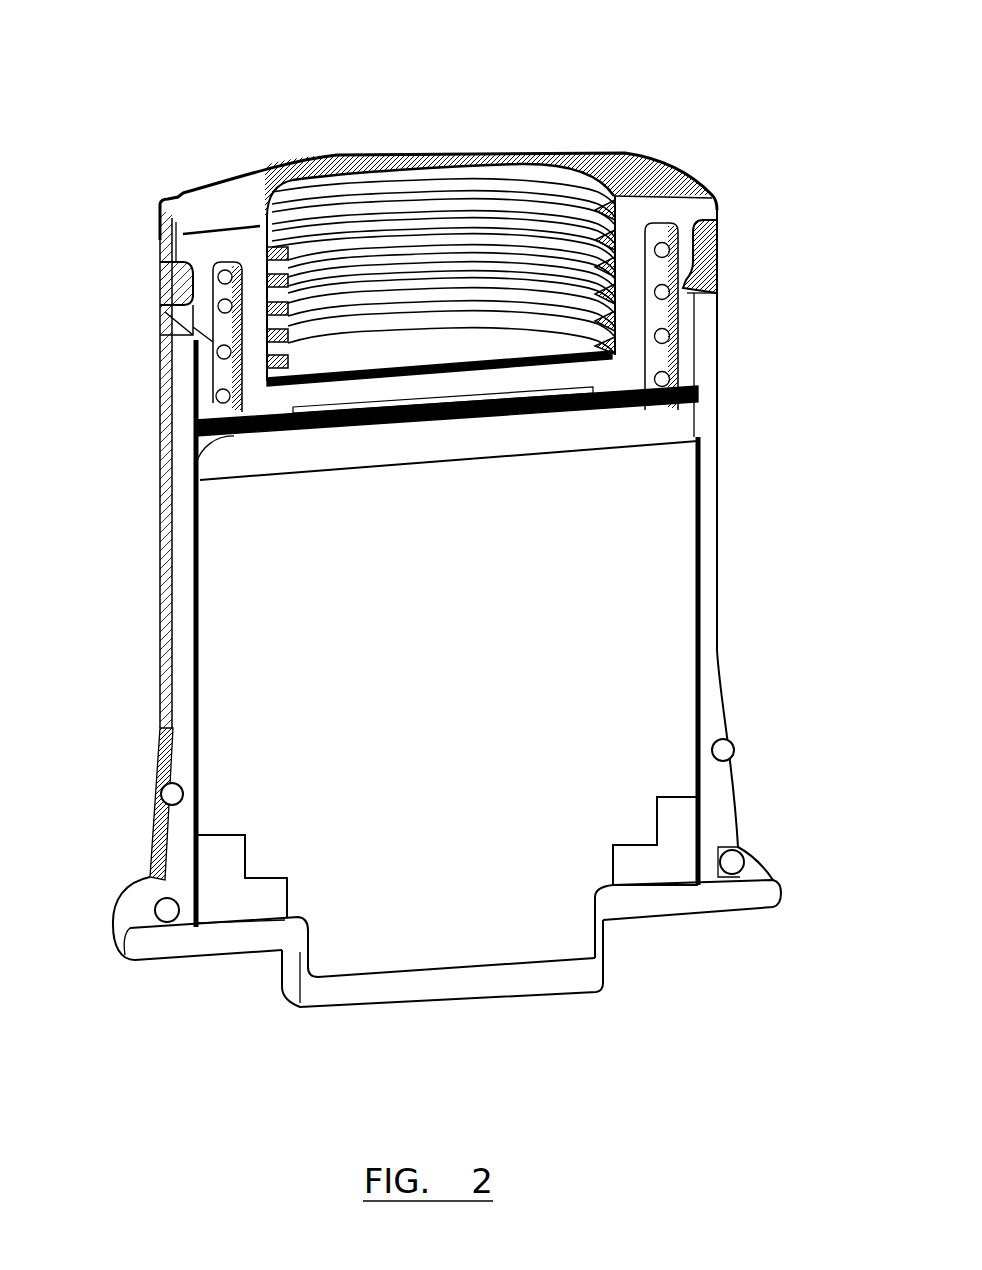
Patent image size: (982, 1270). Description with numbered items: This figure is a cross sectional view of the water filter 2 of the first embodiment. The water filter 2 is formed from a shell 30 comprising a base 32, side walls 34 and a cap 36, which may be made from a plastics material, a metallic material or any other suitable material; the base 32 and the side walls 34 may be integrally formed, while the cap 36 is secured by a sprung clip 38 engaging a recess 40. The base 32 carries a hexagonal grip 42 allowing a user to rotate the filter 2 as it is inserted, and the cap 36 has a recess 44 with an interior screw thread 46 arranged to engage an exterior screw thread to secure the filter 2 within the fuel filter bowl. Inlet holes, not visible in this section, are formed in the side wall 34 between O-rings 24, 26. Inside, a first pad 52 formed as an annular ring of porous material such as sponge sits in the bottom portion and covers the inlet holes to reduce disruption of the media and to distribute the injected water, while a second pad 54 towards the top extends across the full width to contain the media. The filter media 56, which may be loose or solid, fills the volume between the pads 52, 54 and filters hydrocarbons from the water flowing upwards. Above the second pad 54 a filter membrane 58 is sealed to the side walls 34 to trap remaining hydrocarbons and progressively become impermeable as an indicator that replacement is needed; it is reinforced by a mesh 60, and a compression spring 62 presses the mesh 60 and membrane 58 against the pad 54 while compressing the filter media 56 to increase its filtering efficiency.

The water filter 2 is at (322, 130).
The O-ring 24 is at (172, 797).
The O-ring 26 is at (158, 912).
The shell 30 is at (703, 528).
The base 32 is at (622, 905).
The side walls 34 is at (712, 624).
The cap 36 is at (651, 214).
The sprung clip 38 is at (205, 291).
The recess 40 is at (190, 322).
The hexagonal grip 42 is at (468, 977).
The recess 44 is at (483, 210).
The interior screw thread 46 is at (601, 190).
The first pad 52 is at (245, 897).
The second pad 54 is at (680, 412).
The filter media 56 is at (267, 625).
The filter membrane 58 is at (237, 424).
The mesh 60 is at (207, 413).
The compression spring 62 is at (218, 355).